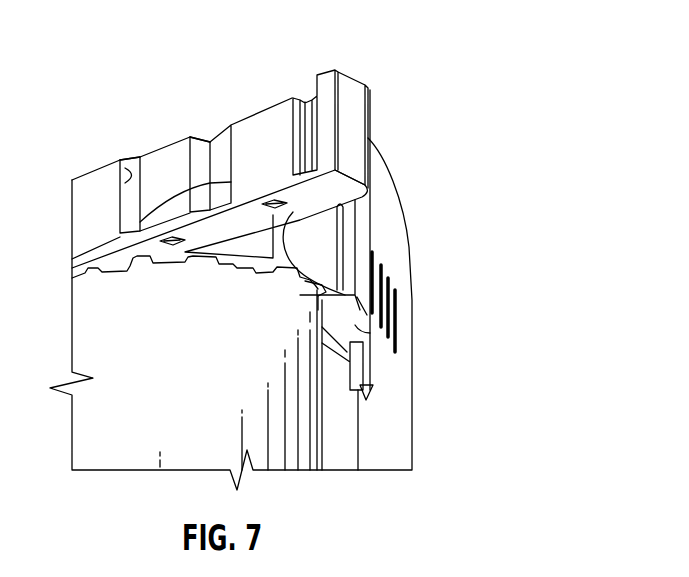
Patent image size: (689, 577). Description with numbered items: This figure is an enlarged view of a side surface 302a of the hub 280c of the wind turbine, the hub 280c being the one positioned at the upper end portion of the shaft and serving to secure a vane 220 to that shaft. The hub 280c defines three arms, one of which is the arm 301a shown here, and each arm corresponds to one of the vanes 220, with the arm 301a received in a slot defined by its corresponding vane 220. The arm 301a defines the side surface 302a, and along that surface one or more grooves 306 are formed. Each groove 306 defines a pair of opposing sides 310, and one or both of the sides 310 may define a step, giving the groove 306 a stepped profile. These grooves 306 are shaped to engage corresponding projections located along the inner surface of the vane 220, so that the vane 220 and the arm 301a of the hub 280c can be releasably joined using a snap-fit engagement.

The vane 220 is at (400, 408).
The third hub 280c is at (387, 233).
The arm 301a is at (378, 113).
The side surface 302a is at (268, 125).
The grooves 306 is at (135, 150).
The opposing sides 310 is at (132, 182).